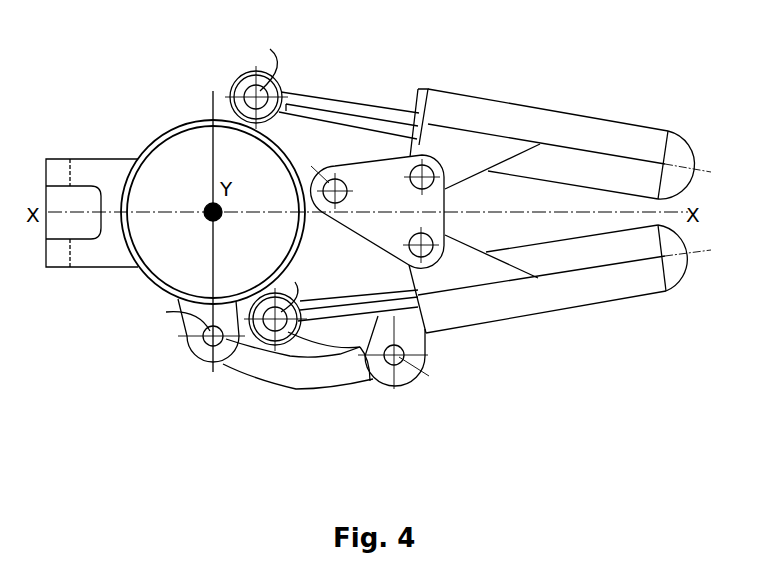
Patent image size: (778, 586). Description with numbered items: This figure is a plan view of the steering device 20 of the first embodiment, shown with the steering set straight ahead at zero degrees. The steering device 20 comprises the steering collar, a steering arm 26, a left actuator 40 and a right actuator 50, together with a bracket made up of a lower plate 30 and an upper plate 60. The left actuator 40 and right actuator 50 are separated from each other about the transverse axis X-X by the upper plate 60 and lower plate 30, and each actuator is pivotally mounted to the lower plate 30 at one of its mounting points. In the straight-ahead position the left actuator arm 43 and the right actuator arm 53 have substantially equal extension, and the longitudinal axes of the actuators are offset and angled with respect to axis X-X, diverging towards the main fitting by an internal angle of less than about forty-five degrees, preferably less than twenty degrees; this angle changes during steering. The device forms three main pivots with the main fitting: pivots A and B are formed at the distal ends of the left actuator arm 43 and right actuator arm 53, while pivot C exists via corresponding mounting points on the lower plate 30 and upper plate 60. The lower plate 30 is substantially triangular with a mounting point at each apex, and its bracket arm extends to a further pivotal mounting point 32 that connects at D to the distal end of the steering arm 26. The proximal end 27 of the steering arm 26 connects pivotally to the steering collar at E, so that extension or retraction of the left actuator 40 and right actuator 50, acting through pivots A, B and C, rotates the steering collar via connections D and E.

The steering device 20 is at (88, 103).
The right actuator arm 53 is at (314, 98).
The right actuator 50 is at (604, 103).
The left actuator 40 is at (573, 324).
The upper plate 60 is at (373, 200).
The lower plate 30 is at (380, 292).
The proximal end of the steering arm 27 is at (212, 334).
The steering arm 26 is at (259, 364).
The left actuator arm 43 is at (351, 323).
The further pivotal mounting point 32 is at (401, 385).